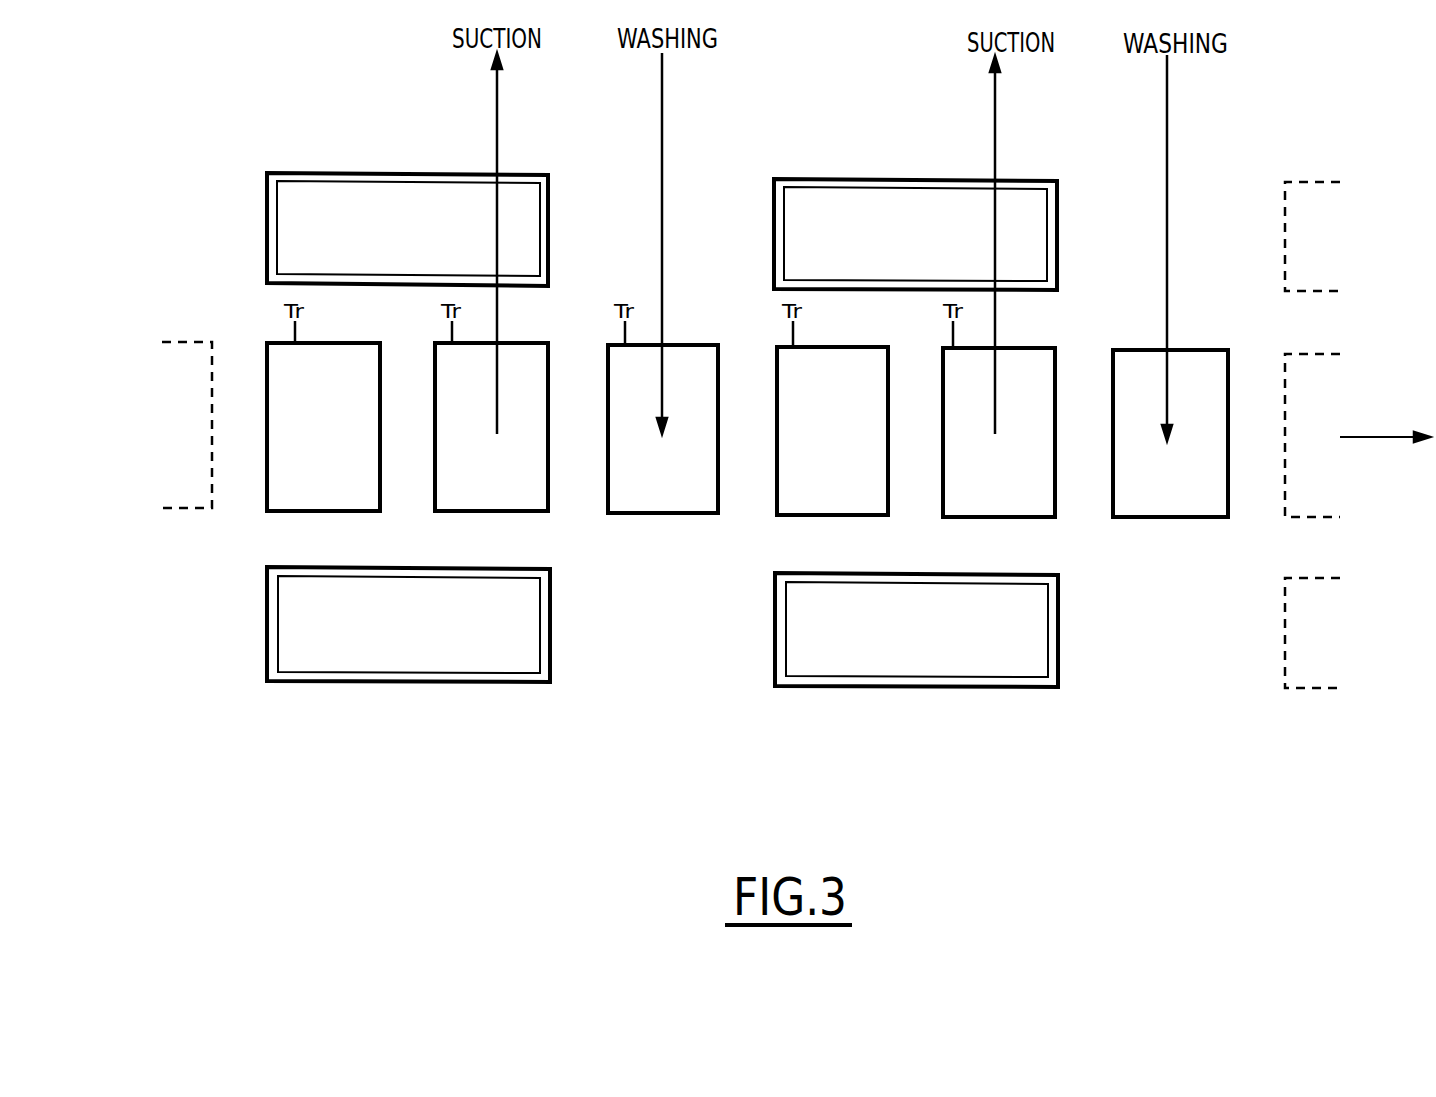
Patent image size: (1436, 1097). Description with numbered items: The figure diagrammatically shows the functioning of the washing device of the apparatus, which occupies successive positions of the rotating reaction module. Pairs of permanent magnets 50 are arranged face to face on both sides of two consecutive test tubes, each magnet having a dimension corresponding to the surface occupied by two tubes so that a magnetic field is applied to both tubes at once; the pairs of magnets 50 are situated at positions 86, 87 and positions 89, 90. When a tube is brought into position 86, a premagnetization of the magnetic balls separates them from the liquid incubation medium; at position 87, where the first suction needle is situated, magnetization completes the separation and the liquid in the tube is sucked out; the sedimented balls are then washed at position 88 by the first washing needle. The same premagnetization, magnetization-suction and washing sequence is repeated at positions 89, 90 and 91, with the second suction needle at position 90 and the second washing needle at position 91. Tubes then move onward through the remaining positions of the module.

The permanent magnets 50 is at (380, 188).
The position 86 of the reaction module 86 is at (332, 512).
The position 87 of the reaction module 87 is at (490, 512).
The position 88 of the reaction module 88 is at (662, 514).
The position 89 of the reaction module 89 is at (833, 514).
The position 90 of the reaction module 90 is at (984, 517).
The position 91 of the reaction module 91 is at (1165, 517).